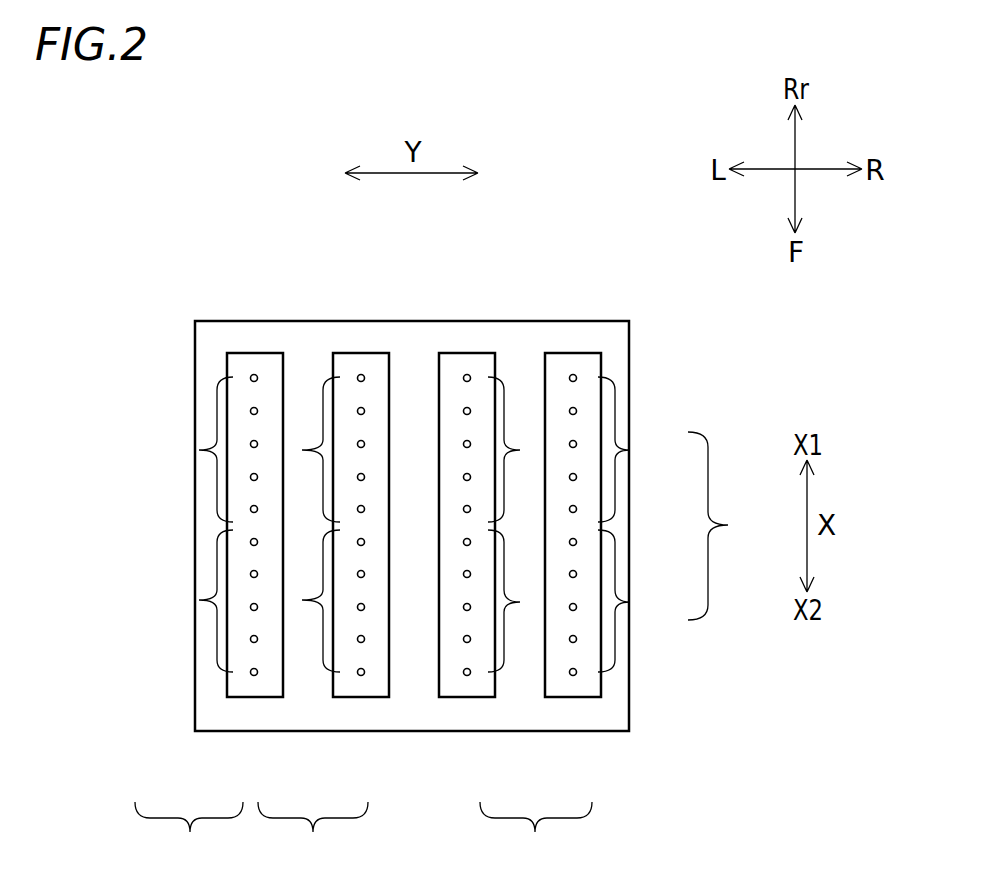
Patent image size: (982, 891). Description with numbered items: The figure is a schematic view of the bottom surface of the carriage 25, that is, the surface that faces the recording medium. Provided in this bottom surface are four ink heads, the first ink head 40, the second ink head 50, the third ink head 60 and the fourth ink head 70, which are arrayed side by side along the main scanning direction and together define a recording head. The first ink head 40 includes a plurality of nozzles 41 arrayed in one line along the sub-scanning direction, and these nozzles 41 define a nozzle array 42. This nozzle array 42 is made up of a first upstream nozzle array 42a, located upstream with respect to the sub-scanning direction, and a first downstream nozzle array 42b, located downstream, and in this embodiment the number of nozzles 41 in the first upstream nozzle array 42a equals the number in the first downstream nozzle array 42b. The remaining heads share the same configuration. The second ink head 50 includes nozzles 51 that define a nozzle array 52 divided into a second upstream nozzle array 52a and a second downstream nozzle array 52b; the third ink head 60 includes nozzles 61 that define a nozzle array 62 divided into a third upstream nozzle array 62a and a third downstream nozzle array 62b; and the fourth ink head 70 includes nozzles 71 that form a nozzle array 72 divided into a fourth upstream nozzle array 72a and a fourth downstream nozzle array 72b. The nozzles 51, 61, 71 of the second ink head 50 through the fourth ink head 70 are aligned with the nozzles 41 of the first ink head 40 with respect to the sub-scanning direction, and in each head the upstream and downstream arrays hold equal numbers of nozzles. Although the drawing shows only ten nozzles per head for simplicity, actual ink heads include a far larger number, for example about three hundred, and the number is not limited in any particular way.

The carriage 25 is at (629, 362).
The first ink head 40 is at (239, 353).
The nozzles 41 is at (257, 373).
The nozzle array 42 is at (189, 836).
The first upstream nozzle array 42a is at (199, 450).
The first downstream nozzle array 42b is at (199, 600).
The second ink head 50 is at (344, 353).
The nozzles 51 is at (362, 373).
The nozzle array 52 is at (313, 836).
The second upstream nozzle array 52a is at (302, 450).
The second downstream nozzle array 52b is at (302, 600).
The third ink head 60 is at (452, 353).
The nozzles 61 is at (468, 373).
The nozzle array 62 is at (536, 836).
The third upstream nozzle array 62a is at (520, 450).
The third downstream nozzle array 62b is at (520, 602).
The fourth ink head 70 is at (565, 353).
The nozzles 71 is at (574, 373).
The nozzle array 72 is at (725, 526).
The fourth upstream nozzle array 72a is at (630, 450).
The fourth downstream nozzle array 72b is at (630, 602).